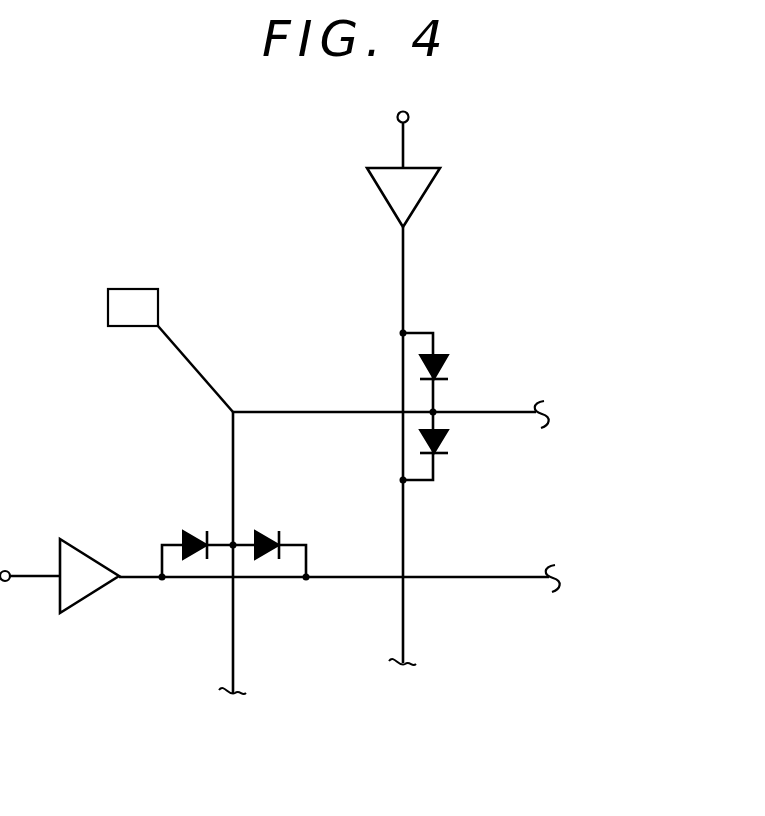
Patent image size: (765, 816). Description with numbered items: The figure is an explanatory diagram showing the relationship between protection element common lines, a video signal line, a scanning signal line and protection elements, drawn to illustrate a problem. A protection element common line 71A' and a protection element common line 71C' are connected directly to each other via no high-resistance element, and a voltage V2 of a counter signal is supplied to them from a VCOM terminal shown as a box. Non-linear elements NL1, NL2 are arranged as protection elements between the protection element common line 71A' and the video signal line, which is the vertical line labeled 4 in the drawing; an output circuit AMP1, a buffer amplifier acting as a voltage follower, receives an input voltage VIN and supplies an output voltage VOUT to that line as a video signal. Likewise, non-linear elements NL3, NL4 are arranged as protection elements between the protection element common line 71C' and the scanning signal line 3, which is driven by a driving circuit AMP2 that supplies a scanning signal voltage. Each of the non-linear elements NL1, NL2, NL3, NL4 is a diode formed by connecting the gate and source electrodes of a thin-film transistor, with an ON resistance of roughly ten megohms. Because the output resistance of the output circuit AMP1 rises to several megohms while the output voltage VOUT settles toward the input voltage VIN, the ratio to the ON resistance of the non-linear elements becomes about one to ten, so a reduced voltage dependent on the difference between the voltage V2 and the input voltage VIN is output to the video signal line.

The input voltage VIN is at (406, 140).
The output circuit AMP1 is at (435, 187).
The output voltage VOUT is at (407, 235).
The output line 4 is at (407, 287).
The non-linear element NL1 is at (450, 353).
The non-linear element NL2 is at (450, 441).
The protection element common line 71A' is at (438, 398).
The voltage of counter signal V2 is at (154, 333).
The protection element common line 71C' is at (189, 567).
The driving circuit AMP2 is at (80, 605).
The scanning signal line 3 is at (488, 578).
The non-linear element NL3 is at (197, 532).
The non-linear element NL4 is at (268, 528).